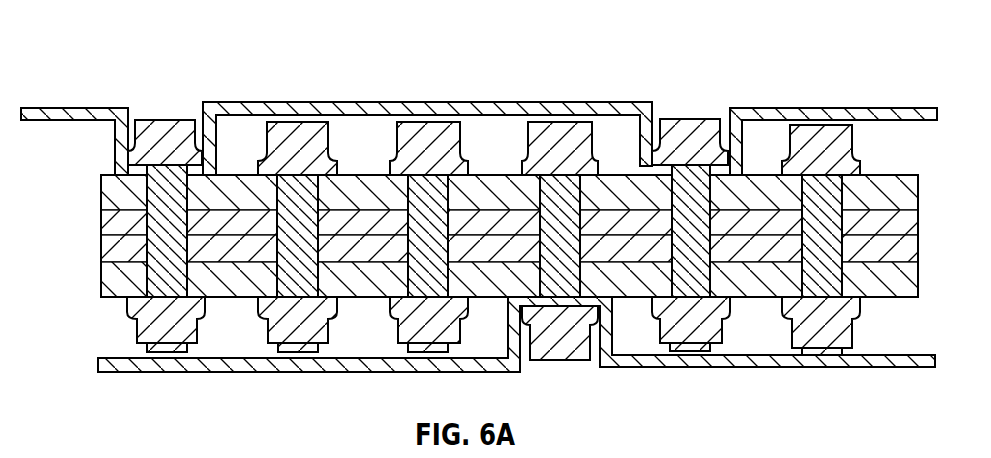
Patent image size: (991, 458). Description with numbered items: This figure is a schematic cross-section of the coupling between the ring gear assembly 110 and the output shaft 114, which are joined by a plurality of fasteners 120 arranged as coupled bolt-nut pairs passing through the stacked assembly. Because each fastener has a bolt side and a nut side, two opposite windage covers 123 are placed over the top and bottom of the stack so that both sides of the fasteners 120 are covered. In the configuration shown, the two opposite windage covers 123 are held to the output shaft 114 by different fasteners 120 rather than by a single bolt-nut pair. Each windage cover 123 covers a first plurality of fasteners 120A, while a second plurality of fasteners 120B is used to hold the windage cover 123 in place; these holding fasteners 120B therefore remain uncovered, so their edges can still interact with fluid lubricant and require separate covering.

The ring gear assembly 110 is at (353, 197).
The output shaft 114 is at (472, 198).
The fasteners 120 is at (825, 138).
The first plurality of fasteners 120A is at (293, 130).
The second plurality of fasteners 120B is at (172, 133).
The windage cover 123 is at (618, 105).